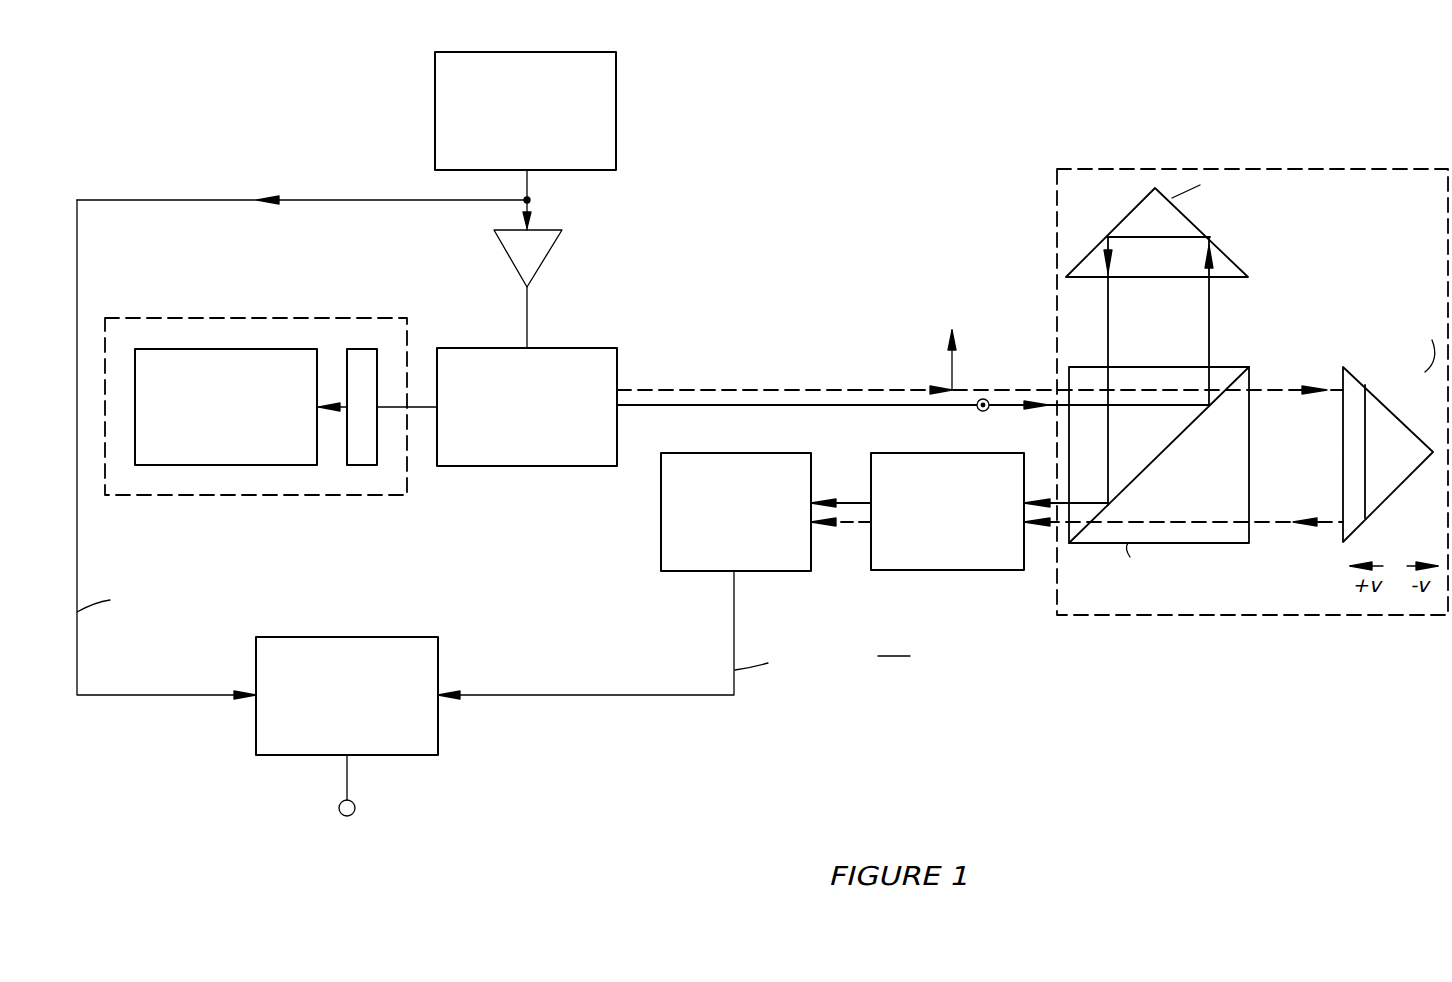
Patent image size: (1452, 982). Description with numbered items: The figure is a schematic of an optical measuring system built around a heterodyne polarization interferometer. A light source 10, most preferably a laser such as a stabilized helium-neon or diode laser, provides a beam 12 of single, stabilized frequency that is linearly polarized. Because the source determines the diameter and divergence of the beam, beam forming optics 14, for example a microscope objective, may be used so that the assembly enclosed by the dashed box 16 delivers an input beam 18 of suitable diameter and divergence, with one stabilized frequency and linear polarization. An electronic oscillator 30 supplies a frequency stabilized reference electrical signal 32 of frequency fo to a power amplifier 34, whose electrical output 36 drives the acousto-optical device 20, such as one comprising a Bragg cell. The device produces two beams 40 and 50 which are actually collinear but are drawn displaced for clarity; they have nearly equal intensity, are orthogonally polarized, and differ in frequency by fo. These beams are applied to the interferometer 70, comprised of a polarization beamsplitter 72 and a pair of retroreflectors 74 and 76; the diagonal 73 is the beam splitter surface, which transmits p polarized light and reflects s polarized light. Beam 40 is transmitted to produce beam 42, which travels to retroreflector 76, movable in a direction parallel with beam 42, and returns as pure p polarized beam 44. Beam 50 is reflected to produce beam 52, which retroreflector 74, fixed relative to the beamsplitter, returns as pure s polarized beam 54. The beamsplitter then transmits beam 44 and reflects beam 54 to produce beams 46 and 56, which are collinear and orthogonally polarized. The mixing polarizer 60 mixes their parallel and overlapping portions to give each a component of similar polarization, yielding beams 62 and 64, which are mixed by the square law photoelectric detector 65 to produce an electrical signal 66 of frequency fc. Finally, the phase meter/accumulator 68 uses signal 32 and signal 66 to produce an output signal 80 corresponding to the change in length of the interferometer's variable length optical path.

The light source 10 is at (200, 349).
The beam 12 is at (320, 412).
The beam forming optics 14 is at (360, 467).
The dashed box 16 is at (195, 318).
The input beam 18 is at (415, 410).
The acousto-optical device 20 is at (600, 348).
The electronic oscillator 30 is at (619, 90).
The reference electrical signal 32 is at (531, 182).
The power amplifier 34 is at (557, 249).
The electrical output 36 is at (525, 305).
The beam 40 is at (720, 390).
The beam 42 is at (1290, 390).
The beam 44 is at (1330, 518).
The beam 46 is at (1052, 535).
The beam 50 is at (822, 410).
The beam 52 is at (1207, 343).
The beam 54 is at (1110, 312).
The beam 56 is at (1052, 490).
The mixing polarizer 60 is at (895, 571).
The beam 62 is at (862, 525).
The beam 64 is at (862, 500).
The photoelectric detector 65 is at (714, 572).
The electrical signal 66 is at (735, 625).
The phase meter/accumulator 68 is at (440, 660).
The interferometer 70 is at (1122, 168).
The polarization beamsplitter 72 is at (1103, 545).
The diagonal 73 is at (1165, 448).
The retroreflector 74 is at (1226, 255).
The retroreflector 76 is at (1405, 485).
The output signal 80 is at (357, 803).